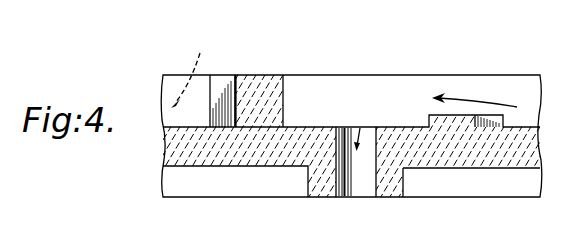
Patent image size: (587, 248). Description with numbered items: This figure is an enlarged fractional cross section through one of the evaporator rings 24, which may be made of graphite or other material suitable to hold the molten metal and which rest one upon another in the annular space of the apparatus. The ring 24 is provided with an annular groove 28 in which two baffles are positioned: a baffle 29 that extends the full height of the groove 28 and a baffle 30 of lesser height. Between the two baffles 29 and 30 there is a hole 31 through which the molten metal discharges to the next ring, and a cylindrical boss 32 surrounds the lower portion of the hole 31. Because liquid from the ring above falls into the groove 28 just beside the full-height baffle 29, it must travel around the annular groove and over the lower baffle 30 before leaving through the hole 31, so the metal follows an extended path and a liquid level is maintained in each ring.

The ring 24 is at (167, 157).
The annular groove 28 is at (351, 85).
The baffle 29 is at (253, 83).
The baffle 30 is at (442, 115).
The hole 31 is at (369, 186).
The cylindrical boss 32 is at (394, 187).